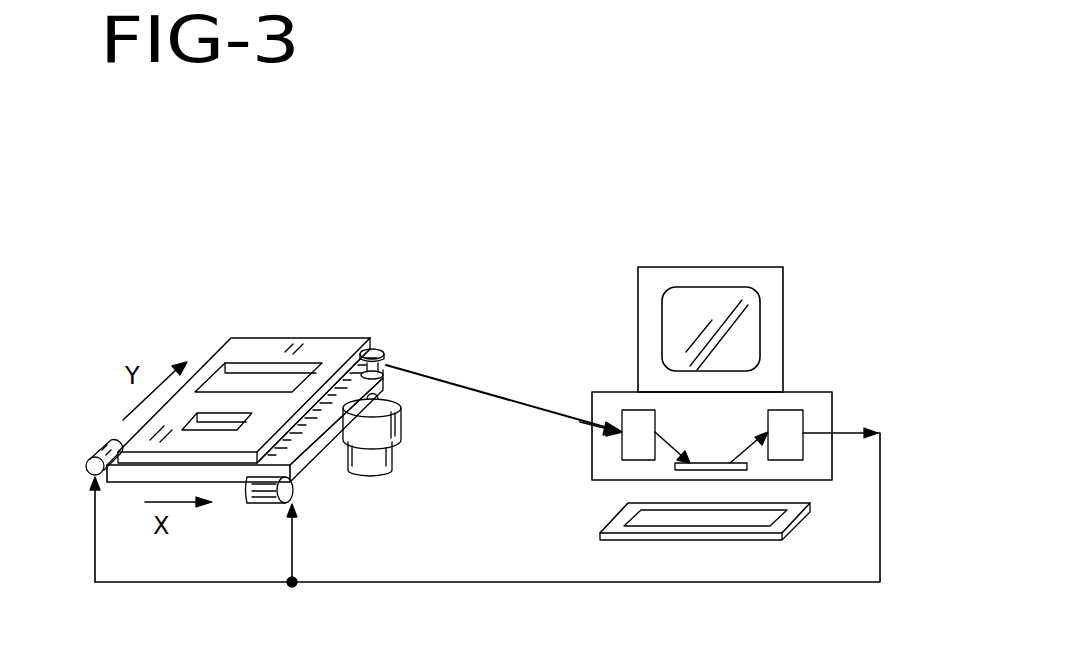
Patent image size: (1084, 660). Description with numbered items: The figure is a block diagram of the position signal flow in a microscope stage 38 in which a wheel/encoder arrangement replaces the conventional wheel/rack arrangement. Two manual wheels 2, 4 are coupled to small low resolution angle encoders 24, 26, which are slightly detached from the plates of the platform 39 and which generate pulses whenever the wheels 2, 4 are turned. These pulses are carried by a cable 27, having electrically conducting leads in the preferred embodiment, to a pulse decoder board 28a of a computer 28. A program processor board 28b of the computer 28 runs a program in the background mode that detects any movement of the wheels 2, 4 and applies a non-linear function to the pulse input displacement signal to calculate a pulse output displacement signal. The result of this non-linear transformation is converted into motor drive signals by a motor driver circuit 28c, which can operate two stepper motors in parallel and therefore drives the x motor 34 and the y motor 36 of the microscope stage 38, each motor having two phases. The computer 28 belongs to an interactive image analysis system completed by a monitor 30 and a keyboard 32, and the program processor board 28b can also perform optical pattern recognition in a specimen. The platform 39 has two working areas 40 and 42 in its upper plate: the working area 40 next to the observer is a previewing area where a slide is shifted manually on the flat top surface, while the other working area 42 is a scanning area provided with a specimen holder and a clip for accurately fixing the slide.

The wheel 2 is at (372, 469).
The wheel 4 is at (388, 438).
The angle encoder 24 is at (384, 380).
The angle encoder 26 is at (375, 350).
The cable 27 is at (470, 391).
The computer 28 is at (808, 391).
The pulse decoder board 28a is at (633, 421).
The program processor board 28b is at (680, 464).
The motor driver circuit 28c is at (786, 423).
The monitor 30 is at (728, 304).
The keyboard 32 is at (803, 518).
The x motor 34 is at (253, 493).
The y motor 36 is at (97, 456).
The microscope stage 38 is at (240, 332).
The platform 39 is at (331, 346).
The working area 40 is at (221, 419).
The working area 42 is at (285, 368).